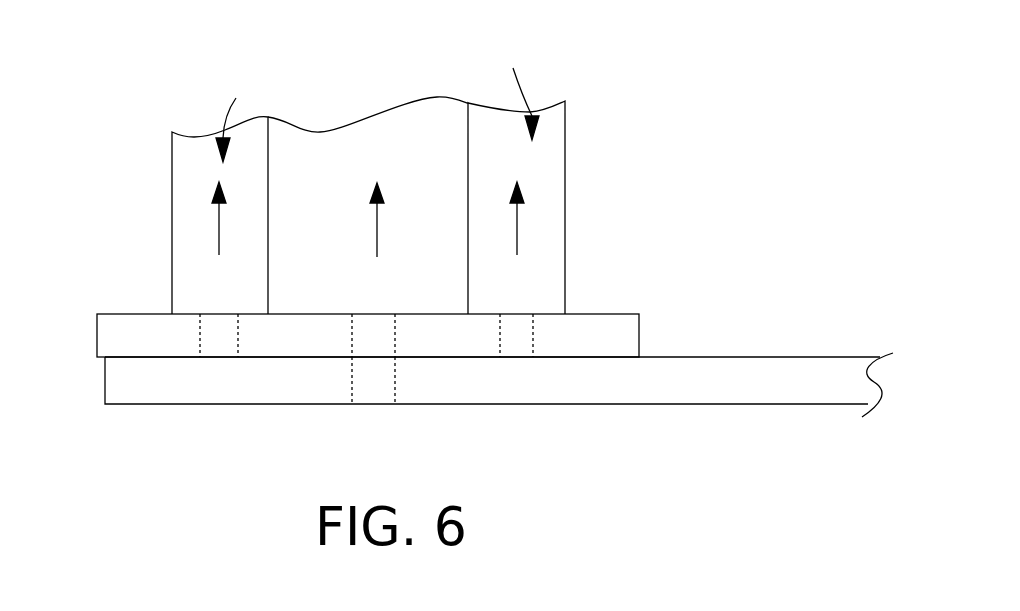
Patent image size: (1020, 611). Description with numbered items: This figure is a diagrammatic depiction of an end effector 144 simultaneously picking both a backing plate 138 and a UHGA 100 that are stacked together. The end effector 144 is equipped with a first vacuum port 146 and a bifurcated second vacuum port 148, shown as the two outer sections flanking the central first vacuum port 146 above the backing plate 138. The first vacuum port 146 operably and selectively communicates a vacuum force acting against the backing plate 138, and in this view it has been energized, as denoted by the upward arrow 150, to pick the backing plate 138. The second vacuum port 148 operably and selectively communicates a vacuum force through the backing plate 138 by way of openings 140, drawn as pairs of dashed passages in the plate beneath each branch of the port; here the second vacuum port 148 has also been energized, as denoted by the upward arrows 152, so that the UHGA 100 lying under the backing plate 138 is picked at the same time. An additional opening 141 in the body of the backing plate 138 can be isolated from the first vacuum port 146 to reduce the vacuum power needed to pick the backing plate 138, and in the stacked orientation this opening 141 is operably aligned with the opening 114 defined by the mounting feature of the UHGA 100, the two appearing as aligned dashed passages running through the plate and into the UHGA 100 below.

The UHGA 100 is at (105, 392).
The backing plate 138 is at (97, 338).
The end effector 144 is at (172, 212).
The first vacuum port 146 is at (352, 131).
The second vacuum port 148 is at (377, 102).
The arrow 150 is at (377, 233).
The arrows 152 is at (219, 232).
The openings 140 is at (233, 337).
The opening 141 is at (395, 342).
The opening 114 is at (395, 393).